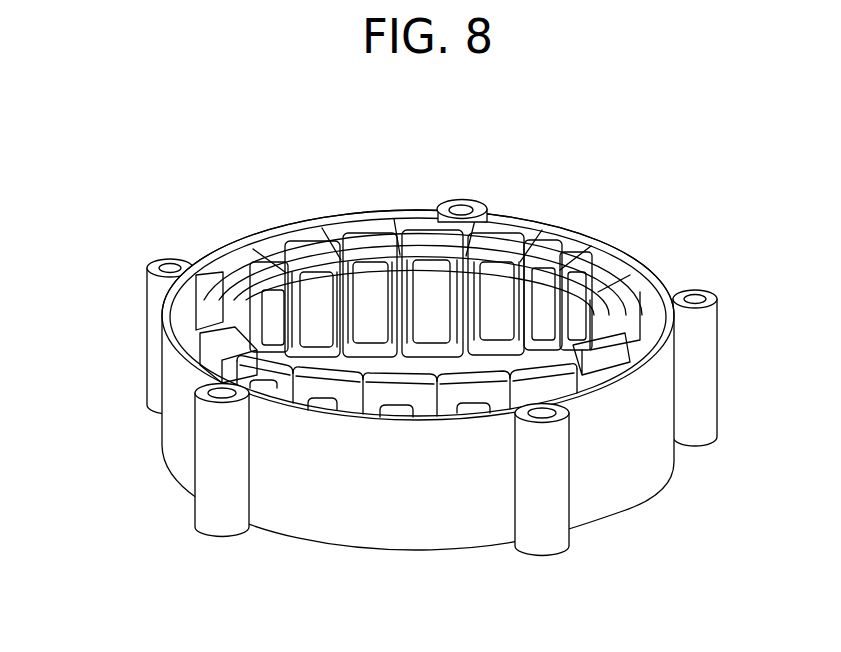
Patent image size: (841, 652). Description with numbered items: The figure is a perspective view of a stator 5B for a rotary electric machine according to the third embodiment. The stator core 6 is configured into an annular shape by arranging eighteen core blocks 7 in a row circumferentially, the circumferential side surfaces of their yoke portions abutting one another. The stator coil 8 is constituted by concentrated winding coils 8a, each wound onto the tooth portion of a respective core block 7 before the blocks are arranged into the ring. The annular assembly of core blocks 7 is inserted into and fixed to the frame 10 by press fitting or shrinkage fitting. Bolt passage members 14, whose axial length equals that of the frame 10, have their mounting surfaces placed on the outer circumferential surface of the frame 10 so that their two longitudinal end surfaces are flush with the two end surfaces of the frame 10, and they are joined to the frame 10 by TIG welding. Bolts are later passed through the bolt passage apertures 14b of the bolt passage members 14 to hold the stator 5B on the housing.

The stator 5B is at (173, 111).
The stator core 6 is at (645, 297).
The core block 7 is at (183, 309).
The stator coil 8 is at (572, 235).
The concentrated winding coil 8a is at (297, 237).
The frame 10 is at (172, 425).
The bolt passage member 14 is at (472, 200).
The bolt passage aperture 14b is at (447, 207).